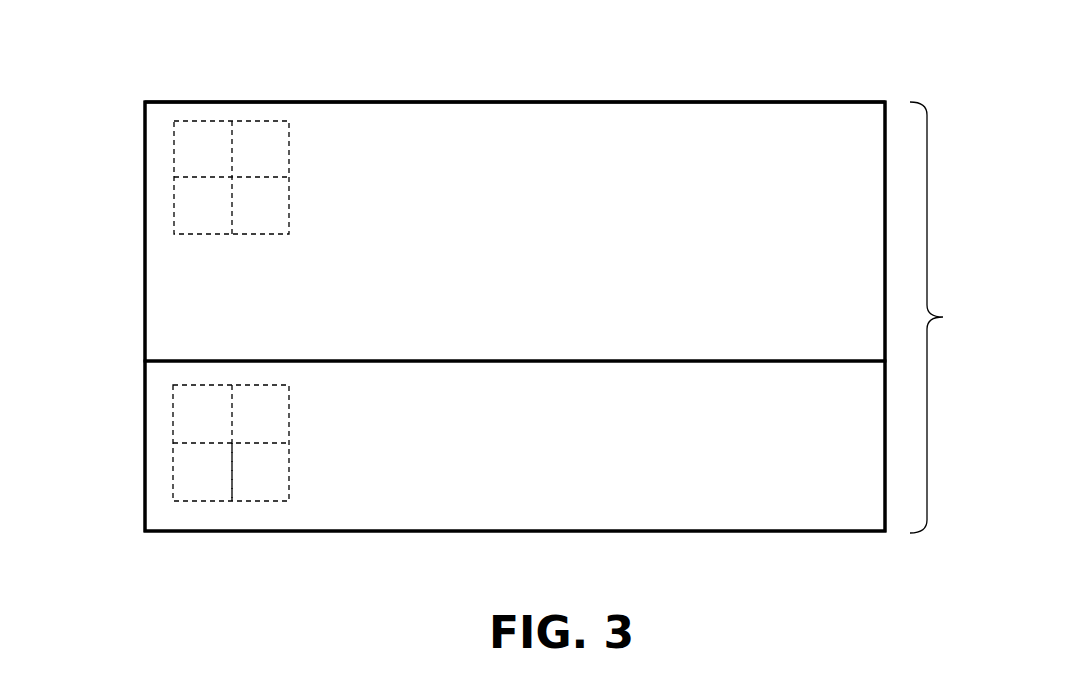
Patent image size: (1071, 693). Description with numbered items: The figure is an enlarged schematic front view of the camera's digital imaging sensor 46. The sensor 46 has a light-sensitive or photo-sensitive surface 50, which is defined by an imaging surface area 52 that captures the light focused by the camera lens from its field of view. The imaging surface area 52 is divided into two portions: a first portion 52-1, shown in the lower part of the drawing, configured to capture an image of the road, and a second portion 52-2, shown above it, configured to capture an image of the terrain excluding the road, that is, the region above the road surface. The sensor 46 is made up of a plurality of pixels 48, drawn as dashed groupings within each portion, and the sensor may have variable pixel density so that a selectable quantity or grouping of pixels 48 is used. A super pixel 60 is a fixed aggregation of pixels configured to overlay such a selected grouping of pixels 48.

The digital imaging sensor 46 is at (858, 90).
The photo-sensitive surface 50 is at (705, 101).
The imaging surface area 52 is at (943, 317).
The first portion 52-1 is at (145, 400).
The second portion 52-2 is at (145, 168).
The pixels 48 is at (291, 130).
The super pixel 60 is at (238, 501).